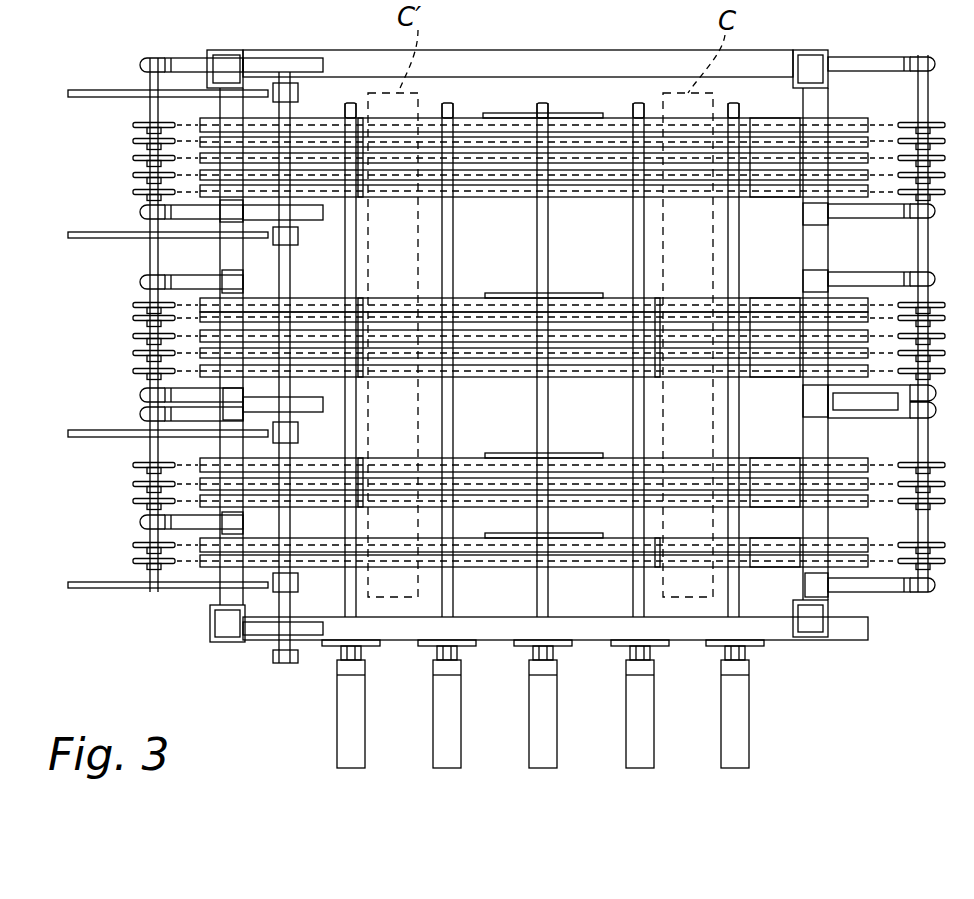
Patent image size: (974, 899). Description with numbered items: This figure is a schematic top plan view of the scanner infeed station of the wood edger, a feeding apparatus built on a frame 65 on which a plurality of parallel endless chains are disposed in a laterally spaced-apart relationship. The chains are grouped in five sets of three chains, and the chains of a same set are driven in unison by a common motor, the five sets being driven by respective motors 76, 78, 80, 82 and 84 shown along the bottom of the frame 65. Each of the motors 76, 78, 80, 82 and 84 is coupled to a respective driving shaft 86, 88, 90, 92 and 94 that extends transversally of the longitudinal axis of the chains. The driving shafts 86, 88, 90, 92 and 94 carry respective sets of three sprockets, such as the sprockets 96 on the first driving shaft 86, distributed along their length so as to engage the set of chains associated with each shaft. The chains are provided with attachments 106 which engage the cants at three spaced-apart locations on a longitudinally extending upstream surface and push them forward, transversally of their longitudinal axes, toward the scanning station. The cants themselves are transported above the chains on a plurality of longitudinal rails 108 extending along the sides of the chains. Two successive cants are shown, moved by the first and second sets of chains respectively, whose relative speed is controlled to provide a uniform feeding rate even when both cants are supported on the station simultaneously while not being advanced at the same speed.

The frame 65 is at (498, 62).
The motor 76 is at (352, 738).
The motor 78 is at (447, 738).
The motor 80 is at (547, 738).
The motor 82 is at (642, 738).
The motor 84 is at (737, 738).
The driving shaft 86 is at (358, 440).
The driving shaft 88 is at (450, 432).
The driving shaft 90 is at (637, 403).
The driving shaft 92 is at (547, 430).
The driving shaft 94 is at (733, 437).
The sprockets 96 is at (323, 138).
The attachments 106 is at (363, 355).
The longitudinal rails 108 is at (785, 185).